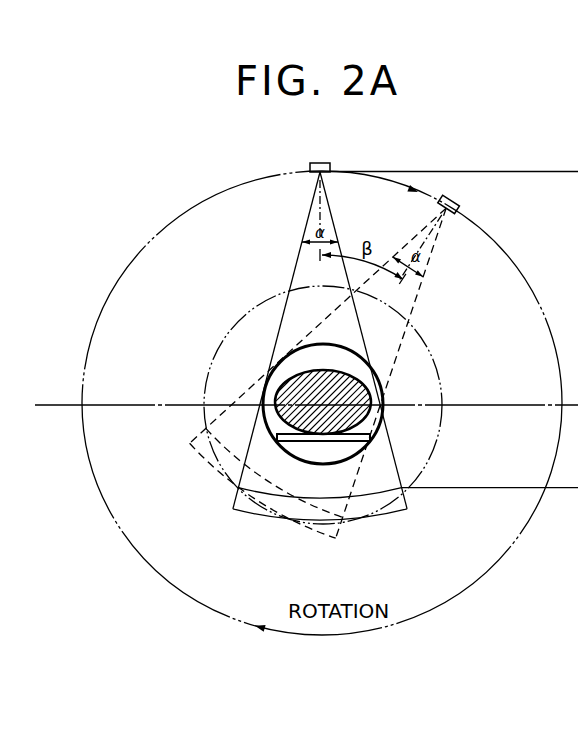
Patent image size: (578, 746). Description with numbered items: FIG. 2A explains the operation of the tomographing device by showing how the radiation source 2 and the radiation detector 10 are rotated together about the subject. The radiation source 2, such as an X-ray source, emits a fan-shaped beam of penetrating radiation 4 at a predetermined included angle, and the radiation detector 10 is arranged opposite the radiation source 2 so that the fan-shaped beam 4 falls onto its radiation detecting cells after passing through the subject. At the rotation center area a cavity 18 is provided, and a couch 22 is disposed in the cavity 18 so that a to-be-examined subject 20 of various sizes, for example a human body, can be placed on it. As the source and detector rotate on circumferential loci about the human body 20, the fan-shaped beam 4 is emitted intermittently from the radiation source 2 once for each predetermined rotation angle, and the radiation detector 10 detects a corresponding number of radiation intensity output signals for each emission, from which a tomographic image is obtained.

The radiation source 2 is at (322, 163).
The fan-shaped beam of penetrating radiation 4 is at (296, 268).
The radiation detector 10 is at (388, 508).
The cavity 18 is at (275, 368).
The to-be-examined subject 20 is at (358, 410).
The couch 22 is at (302, 442).